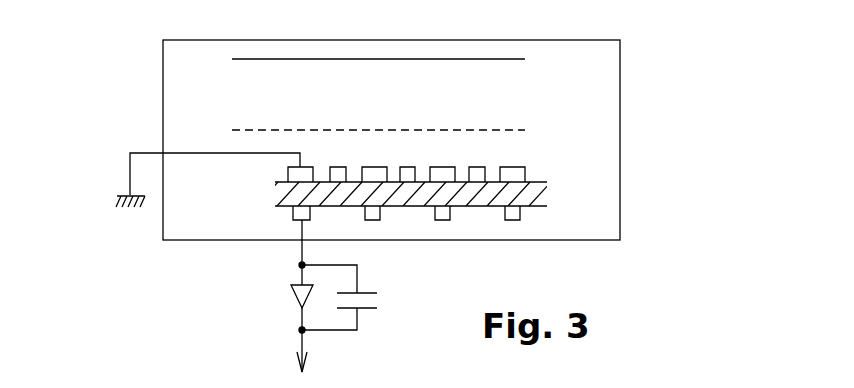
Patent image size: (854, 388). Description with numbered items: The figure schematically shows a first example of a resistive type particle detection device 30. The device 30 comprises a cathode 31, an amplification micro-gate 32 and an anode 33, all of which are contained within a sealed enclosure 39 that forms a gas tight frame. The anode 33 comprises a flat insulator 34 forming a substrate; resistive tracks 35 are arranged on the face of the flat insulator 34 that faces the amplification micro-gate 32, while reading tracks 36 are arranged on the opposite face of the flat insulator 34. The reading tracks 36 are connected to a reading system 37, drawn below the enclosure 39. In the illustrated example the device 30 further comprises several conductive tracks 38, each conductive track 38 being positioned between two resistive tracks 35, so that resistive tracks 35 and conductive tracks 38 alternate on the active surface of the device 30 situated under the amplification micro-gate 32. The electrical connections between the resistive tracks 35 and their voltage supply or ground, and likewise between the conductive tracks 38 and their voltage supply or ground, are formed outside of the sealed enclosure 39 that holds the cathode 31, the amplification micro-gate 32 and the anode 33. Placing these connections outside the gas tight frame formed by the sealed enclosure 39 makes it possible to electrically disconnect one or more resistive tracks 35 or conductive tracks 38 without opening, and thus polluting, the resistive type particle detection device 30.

The resistive type particle detection device 30 is at (146, 73).
The cathode 31 is at (485, 58).
The amplification micro-gate 32 is at (502, 129).
The anode 33 is at (164, 230).
The flat insulator 34 is at (540, 197).
The resistive tracks 35 is at (522, 178).
The reading tracks 36 is at (512, 221).
The reading system 37 is at (372, 329).
The conductive tracks 38 is at (338, 158).
The sealed enclosure 39 is at (621, 77).